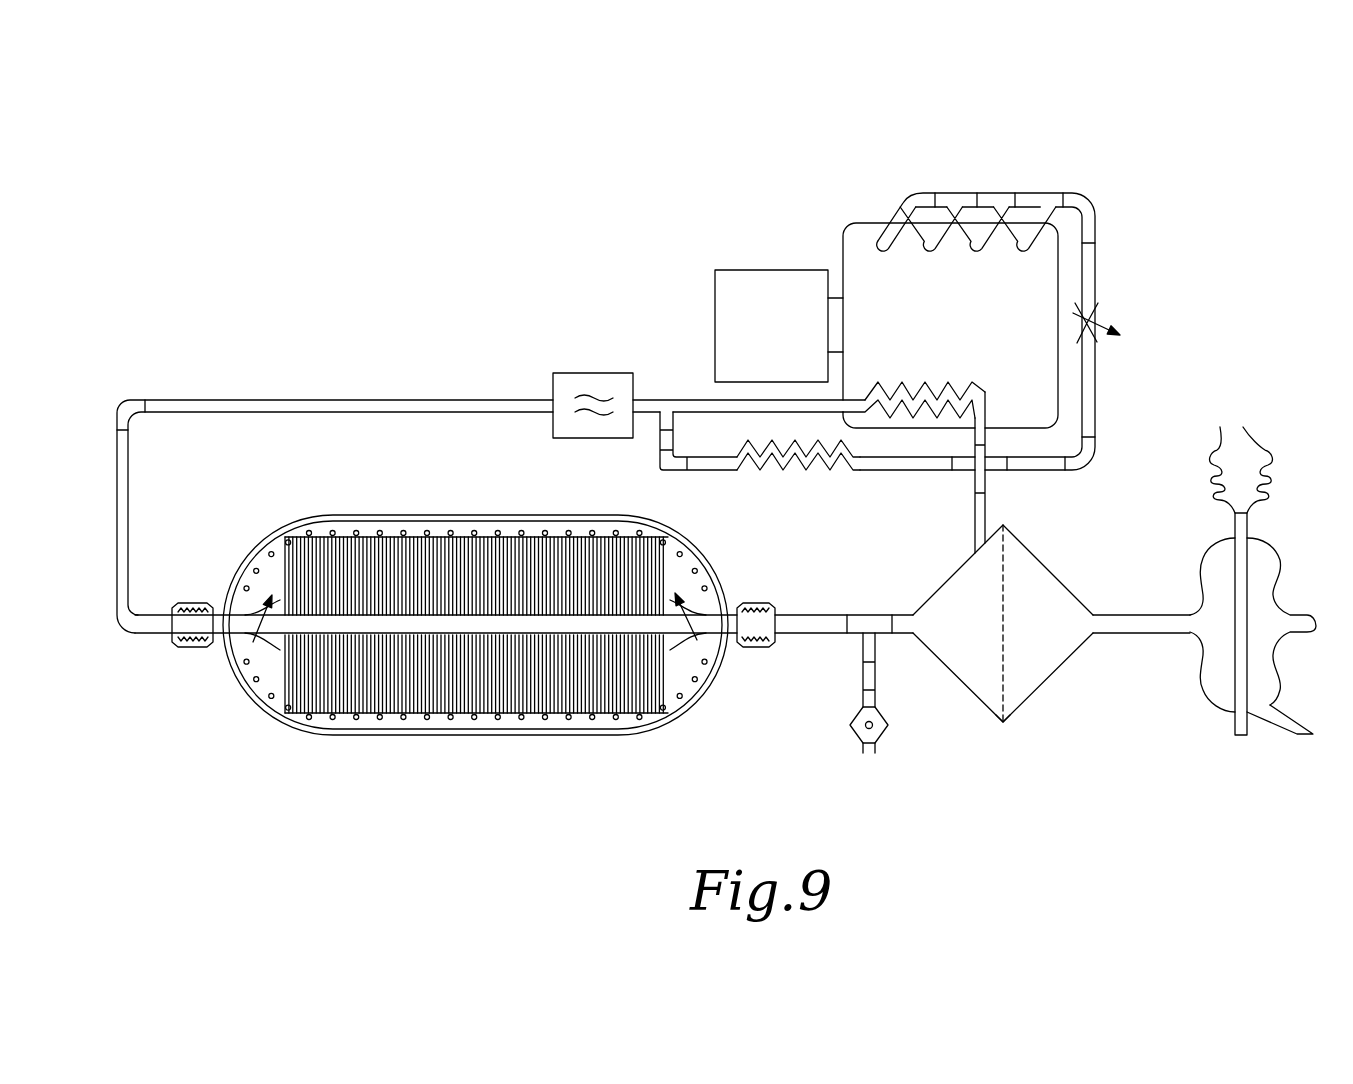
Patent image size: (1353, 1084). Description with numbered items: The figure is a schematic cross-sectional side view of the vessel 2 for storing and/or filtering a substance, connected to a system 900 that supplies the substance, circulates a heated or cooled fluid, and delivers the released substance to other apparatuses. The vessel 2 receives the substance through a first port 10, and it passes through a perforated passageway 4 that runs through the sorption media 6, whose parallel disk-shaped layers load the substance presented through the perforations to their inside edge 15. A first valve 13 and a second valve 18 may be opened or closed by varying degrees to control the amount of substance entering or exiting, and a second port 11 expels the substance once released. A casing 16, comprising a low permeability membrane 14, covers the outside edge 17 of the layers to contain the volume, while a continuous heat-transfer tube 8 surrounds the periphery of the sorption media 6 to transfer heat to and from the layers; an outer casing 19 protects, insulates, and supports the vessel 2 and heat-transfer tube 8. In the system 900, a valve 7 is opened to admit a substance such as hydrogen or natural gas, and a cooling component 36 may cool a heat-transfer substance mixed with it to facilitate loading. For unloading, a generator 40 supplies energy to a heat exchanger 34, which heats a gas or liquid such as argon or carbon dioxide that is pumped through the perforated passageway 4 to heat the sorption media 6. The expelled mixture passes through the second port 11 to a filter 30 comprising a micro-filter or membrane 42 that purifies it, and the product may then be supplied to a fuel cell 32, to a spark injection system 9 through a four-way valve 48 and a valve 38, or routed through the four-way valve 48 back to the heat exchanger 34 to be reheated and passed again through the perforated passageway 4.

The system 900 is at (1032, 158).
The vessel 2 is at (583, 516).
The perforated passageway 4 is at (355, 635).
The sorption media 6 is at (466, 550).
The valve 7 is at (877, 733).
The heat-transfer tube 8 is at (382, 718).
The spark injection system 9 is at (982, 247).
The first port 10 is at (185, 647).
The second port 11 is at (753, 603).
The first valve 13 is at (255, 618).
The membrane 14 is at (297, 530).
The inside edge 15 is at (465, 640).
The casing 16 is at (437, 732).
The outside edge 17 is at (367, 537).
The second valve 18 is at (692, 677).
The outer casing 19 is at (275, 532).
The filter 30 is at (1013, 710).
The fuel cell 32 is at (1223, 710).
The heat exchanger 34 is at (917, 383).
The cooling component 36 is at (595, 373).
The valve 38 is at (1100, 312).
The generator 40 is at (770, 270).
The membrane 42 is at (997, 710).
The four-way valve 48 is at (990, 480).